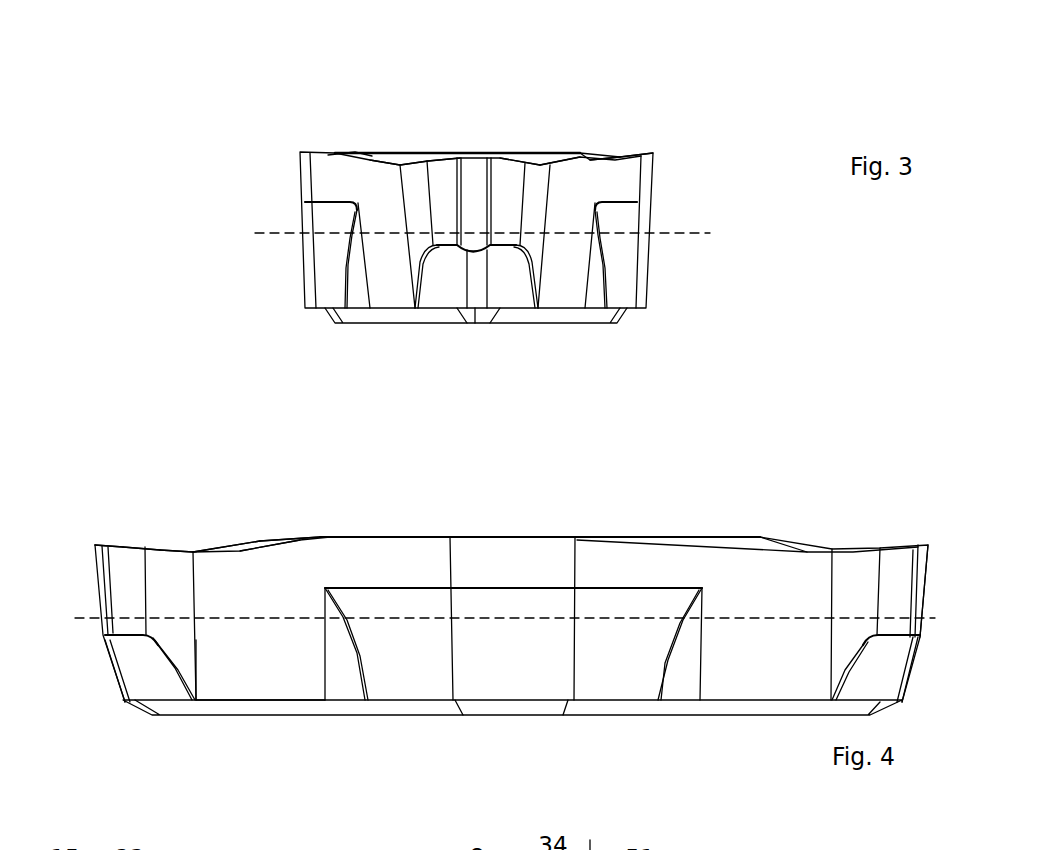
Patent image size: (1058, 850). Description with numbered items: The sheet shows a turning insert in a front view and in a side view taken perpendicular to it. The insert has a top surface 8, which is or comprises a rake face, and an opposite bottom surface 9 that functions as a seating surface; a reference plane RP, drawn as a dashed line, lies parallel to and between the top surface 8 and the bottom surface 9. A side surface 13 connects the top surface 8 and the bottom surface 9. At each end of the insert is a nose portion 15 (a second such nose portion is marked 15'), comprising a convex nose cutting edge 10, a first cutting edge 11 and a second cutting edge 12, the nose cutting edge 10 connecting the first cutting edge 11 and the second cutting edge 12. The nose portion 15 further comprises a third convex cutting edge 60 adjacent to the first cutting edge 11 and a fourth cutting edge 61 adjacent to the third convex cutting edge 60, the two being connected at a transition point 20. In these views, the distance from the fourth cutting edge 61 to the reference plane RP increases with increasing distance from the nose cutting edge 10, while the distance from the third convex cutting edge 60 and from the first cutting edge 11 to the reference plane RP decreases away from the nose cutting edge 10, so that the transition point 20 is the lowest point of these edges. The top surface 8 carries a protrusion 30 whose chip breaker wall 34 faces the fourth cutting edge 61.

In FIG. 3, the top surface 8 is at (417, 152).
In FIG. 4, the top surface 8 is at (350, 537).
In FIG. 3, the bottom surface 9 is at (530, 322).
In FIG. 4, the bottom surface 9 is at (303, 715).
In FIG. 3, the nose cutting edge 10 is at (480, 158).
In FIG. 4, the nose cutting edge 10 is at (98, 547).
In FIG. 3, the first cutting edge 11 is at (507, 158).
In FIG. 4, the first cutting edge 11 is at (123, 545).
In FIG. 3, the second cutting edge 12 is at (440, 162).
In FIG. 4, the side surface 13 is at (258, 648).
In FIG. 4, the nose portion 15 is at (485, 514).
In FIG. 4, the cutting insert (second) 15' is at (941, 522).
In FIG. 3, the transition point 20 is at (553, 163).
In FIG. 4, the transition point 20 is at (193, 550).
In FIG. 4, the protrusion 30 is at (322, 538).
In FIG. 3, the chip breaker wall 34 is at (567, 158).
In FIG. 4, the chip breaker wall 34 is at (270, 542).
In FIG. 3, the third convex cutting edge 60 is at (537, 163).
In FIG. 4, the third convex cutting edge 60 is at (161, 548).
In FIG. 3, the fourth cutting edge 61 is at (607, 155).
In FIG. 4, the fourth cutting edge 61 is at (237, 550).
In FIG. 3, the reference plane RP is at (460, 233).
In FIG. 4, the reference plane RP is at (488, 618).